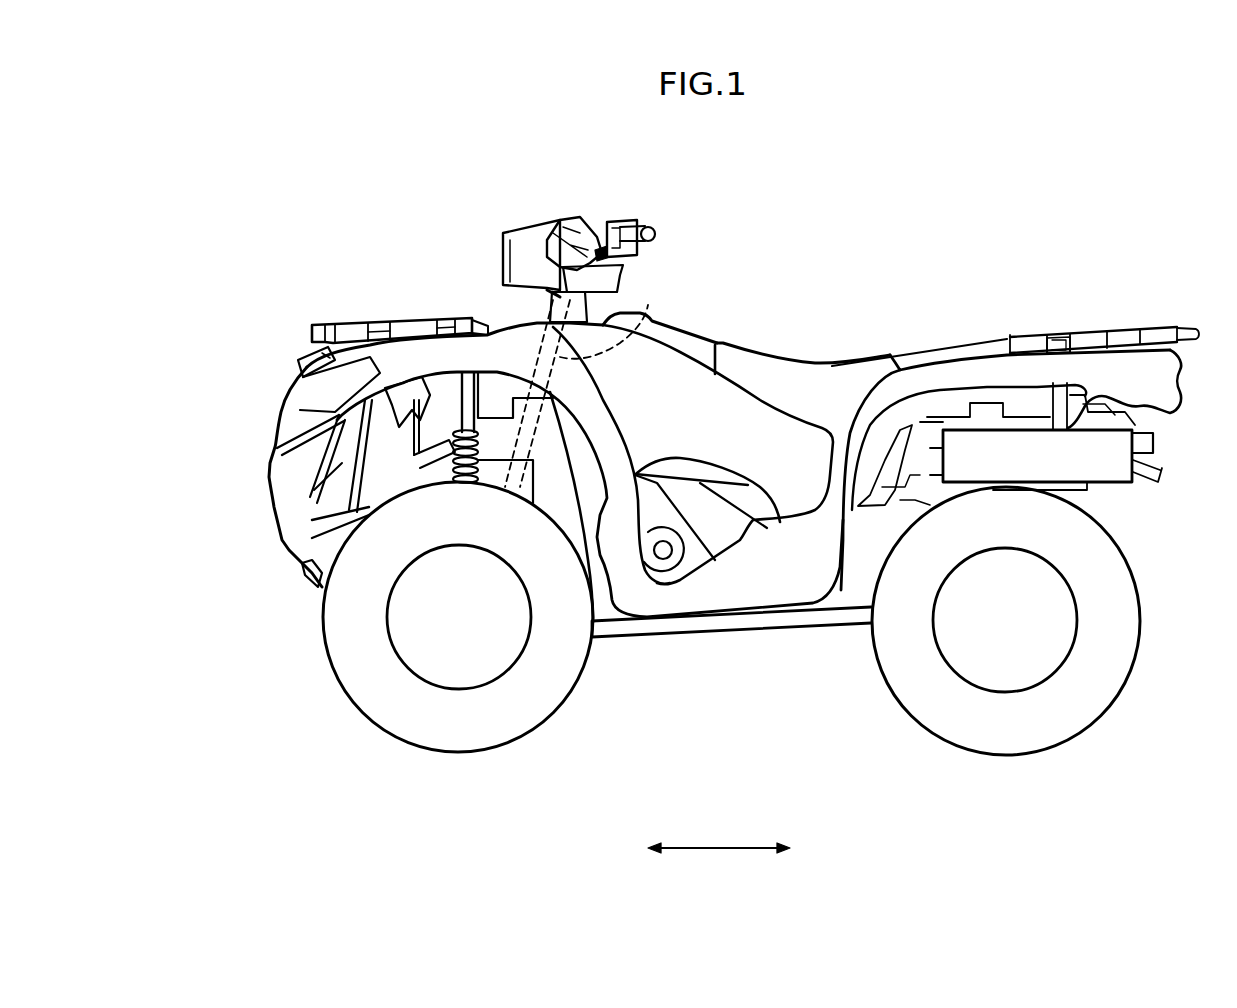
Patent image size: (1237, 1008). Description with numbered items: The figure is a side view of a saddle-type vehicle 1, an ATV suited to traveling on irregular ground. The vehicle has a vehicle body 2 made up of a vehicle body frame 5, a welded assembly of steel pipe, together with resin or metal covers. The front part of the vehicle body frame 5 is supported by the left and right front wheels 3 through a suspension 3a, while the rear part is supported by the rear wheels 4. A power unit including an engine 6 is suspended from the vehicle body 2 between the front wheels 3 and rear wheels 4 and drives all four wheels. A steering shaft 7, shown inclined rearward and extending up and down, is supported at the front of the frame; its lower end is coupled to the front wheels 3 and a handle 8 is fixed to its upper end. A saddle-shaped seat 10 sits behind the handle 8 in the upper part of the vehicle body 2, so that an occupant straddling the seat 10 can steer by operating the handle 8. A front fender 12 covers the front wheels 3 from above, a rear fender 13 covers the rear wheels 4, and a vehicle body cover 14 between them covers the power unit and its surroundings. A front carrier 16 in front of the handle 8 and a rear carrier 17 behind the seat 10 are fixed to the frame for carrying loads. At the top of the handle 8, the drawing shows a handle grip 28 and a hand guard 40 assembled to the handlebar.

The saddle-type vehicle 1 is at (811, 198).
The vehicle body 2 is at (737, 345).
The front wheels 3 is at (458, 755).
The suspension 3a is at (448, 457).
The rear wheels 4 is at (1098, 717).
The vehicle body frame 5 is at (756, 632).
The engine 6 is at (678, 565).
The steering shaft 7 is at (650, 302).
The handle 8 is at (606, 198).
The seat 10 is at (800, 362).
The front fender 12 is at (382, 365).
The rear fender 13 is at (1027, 368).
The vehicle body cover 14 is at (685, 388).
The front carrier 16 is at (340, 334).
The rear carrier 17 is at (1124, 340).
The handle grip 28 is at (639, 218).
The hand guard 40 is at (575, 217).